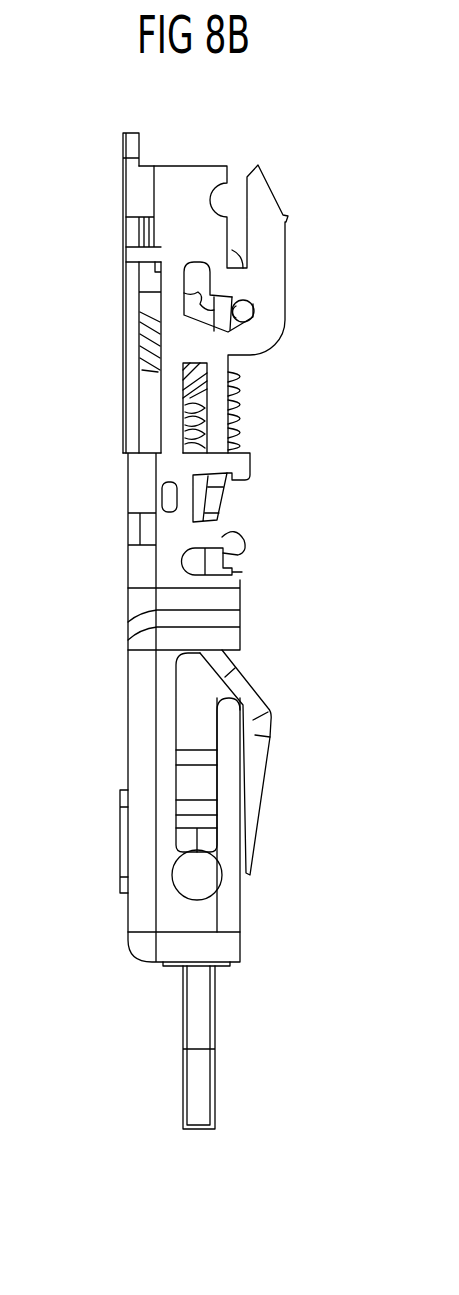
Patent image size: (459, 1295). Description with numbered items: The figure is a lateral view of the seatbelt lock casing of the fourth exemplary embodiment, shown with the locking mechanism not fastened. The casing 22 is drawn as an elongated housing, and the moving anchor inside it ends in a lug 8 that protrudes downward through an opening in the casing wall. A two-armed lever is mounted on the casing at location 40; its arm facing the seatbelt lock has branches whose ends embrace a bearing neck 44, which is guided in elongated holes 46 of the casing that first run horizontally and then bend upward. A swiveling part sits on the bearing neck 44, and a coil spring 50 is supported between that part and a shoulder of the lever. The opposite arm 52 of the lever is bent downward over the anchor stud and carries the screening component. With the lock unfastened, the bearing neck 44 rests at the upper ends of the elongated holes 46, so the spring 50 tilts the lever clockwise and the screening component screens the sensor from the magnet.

The casing 22 is at (125, 568).
The elongated holes 46 is at (197, 275).
The bearing neck 44 is at (242, 310).
The coil spring 50 is at (253, 410).
The lever bearing location 40 is at (220, 537).
The arm 52 is at (253, 702).
The lug 8 is at (197, 1012).